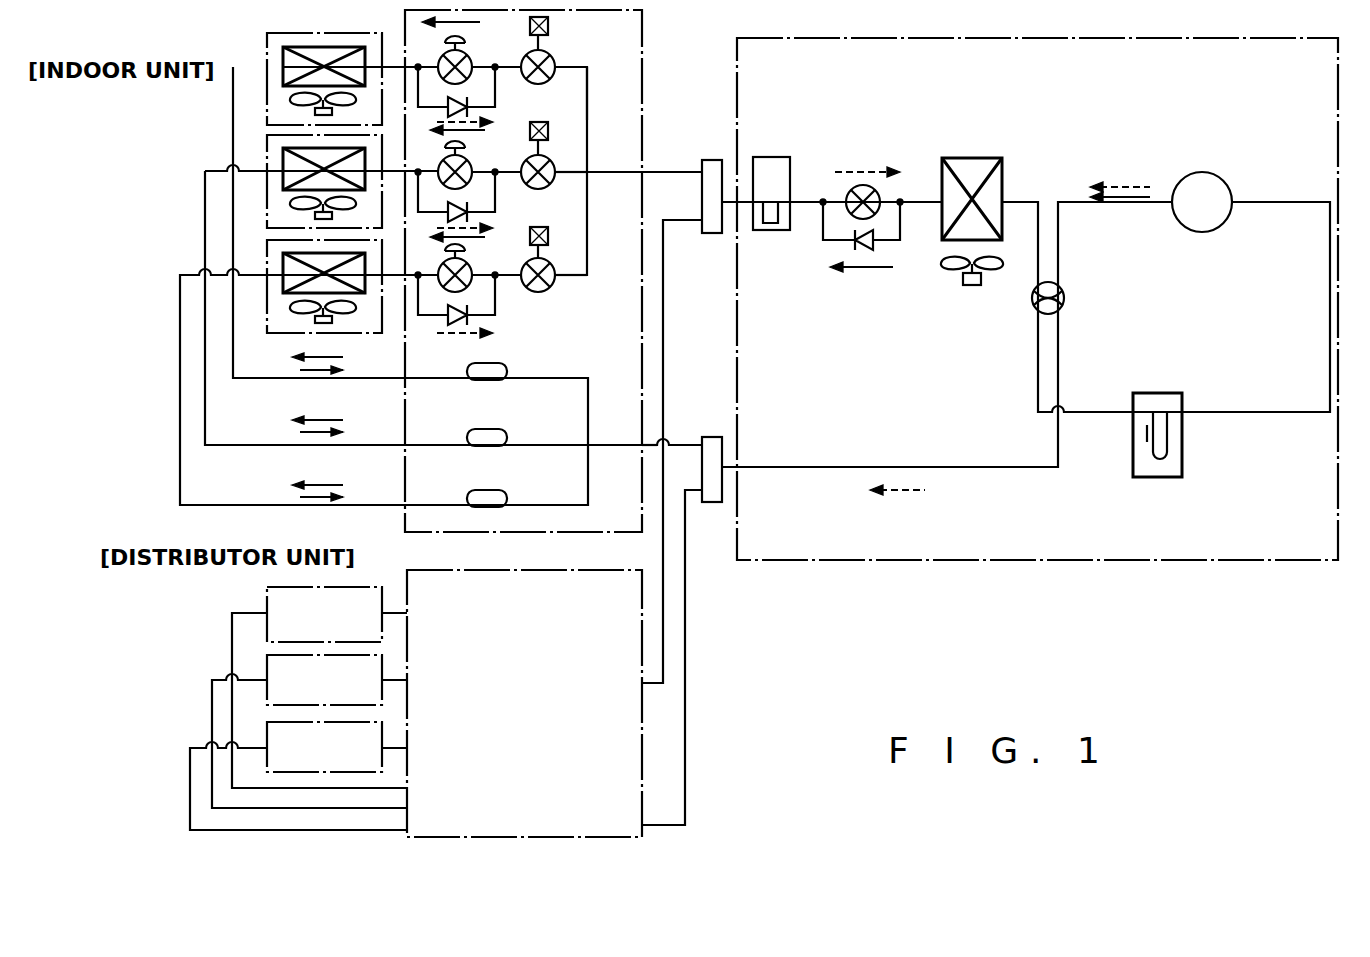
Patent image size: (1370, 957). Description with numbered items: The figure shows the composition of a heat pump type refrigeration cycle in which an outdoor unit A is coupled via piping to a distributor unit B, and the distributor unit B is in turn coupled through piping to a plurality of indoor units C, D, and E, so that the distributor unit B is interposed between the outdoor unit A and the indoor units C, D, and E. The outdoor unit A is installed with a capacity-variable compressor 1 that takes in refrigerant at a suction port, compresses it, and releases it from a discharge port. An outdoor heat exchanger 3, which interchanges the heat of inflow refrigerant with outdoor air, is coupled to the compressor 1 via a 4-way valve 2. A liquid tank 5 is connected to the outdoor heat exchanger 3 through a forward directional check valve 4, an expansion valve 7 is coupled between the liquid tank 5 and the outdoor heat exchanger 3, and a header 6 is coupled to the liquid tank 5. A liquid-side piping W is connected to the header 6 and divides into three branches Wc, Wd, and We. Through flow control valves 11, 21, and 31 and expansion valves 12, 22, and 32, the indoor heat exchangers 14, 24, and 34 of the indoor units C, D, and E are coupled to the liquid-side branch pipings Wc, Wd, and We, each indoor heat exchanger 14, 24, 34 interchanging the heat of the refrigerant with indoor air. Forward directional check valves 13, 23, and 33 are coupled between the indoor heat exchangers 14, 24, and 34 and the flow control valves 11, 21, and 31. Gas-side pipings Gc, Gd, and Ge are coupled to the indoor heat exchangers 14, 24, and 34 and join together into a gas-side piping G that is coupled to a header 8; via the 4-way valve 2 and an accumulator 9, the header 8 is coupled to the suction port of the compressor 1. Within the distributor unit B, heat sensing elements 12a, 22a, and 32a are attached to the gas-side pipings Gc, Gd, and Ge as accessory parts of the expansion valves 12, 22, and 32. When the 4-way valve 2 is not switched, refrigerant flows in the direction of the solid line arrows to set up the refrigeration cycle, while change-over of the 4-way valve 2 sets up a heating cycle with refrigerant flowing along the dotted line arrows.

The capacity-variable compressor 1 is at (1222, 181).
The 4-way valve 2 is at (1066, 298).
The outdoor heat exchanger 3 is at (976, 158).
The forward directional check valve 4 is at (875, 245).
The liquid tank 5 is at (780, 157).
The header 6 is at (712, 160).
The expansion valve 7 is at (849, 192).
The header 8 is at (712, 437).
The accumulator 9 is at (1185, 466).
The flow control valve 11 is at (552, 56).
The expansion valve 12 is at (470, 56).
The forward directional check valve 13 is at (470, 102).
The indoor heat exchanger 14 is at (283, 78).
The flow control valve 21 is at (549, 152).
The expansion valve 22 is at (470, 161).
The forward directional check valve 23 is at (470, 212).
The indoor heat exchanger 24 is at (283, 182).
The flow control valve 31 is at (549, 257).
The expansion valve 32 is at (470, 265).
The forward directional check valve 33 is at (470, 317).
The indoor heat exchanger 34 is at (283, 293).
The heat sensing element 12a is at (470, 368).
The heat sensing element 22a is at (470, 434).
The heat sensing element 32a is at (470, 495).
The outdoor unit A is at (847, 560).
The distributor unit B is at (405, 526).
The indoor unit C is at (267, 52).
The indoor unit D is at (267, 163).
The indoor unit E is at (267, 265).
The liquid-side piping W is at (664, 167).
The liquid-side branch piping Wc is at (588, 135).
The liquid-side branch piping Wd is at (568, 172).
The liquid-side branch piping We is at (566, 277).
The gas-side piping G is at (678, 441).
The gas-side piping Gc is at (588, 402).
The gas-side piping Gd is at (538, 443).
The gas-side piping Ge is at (538, 503).